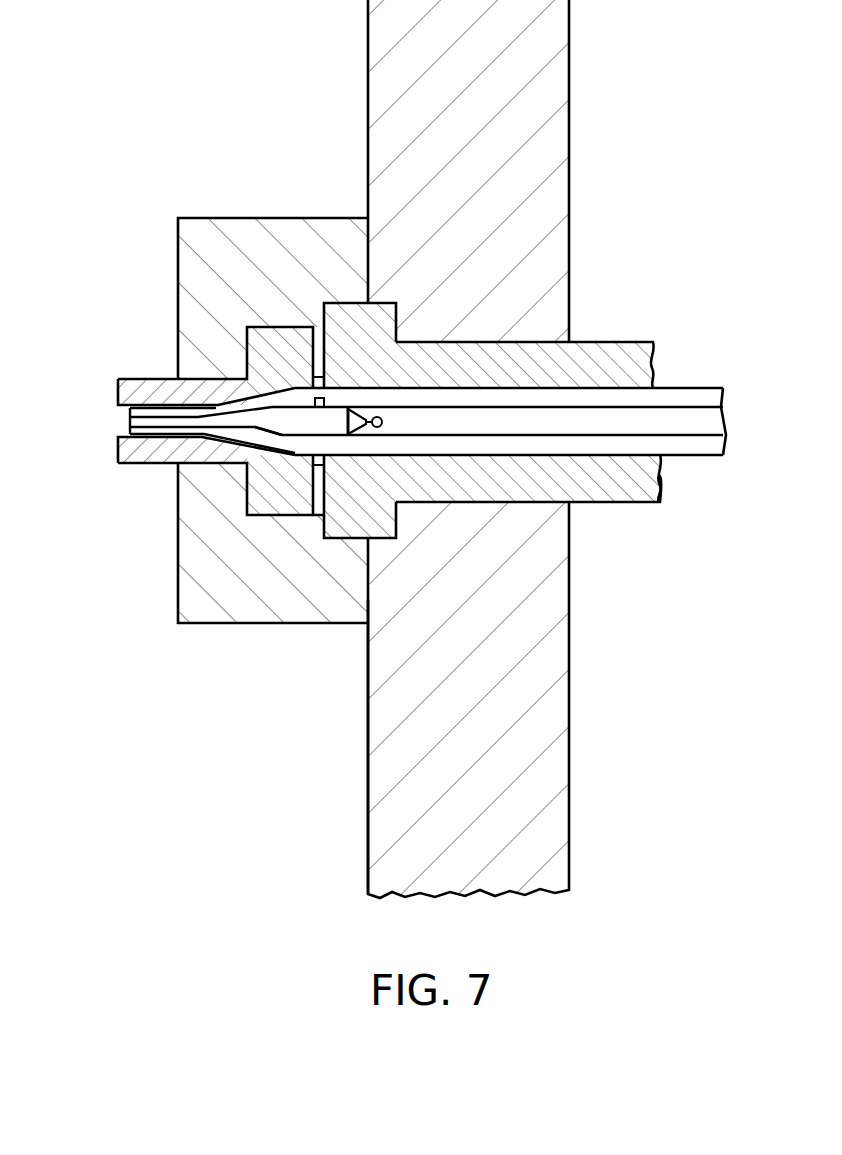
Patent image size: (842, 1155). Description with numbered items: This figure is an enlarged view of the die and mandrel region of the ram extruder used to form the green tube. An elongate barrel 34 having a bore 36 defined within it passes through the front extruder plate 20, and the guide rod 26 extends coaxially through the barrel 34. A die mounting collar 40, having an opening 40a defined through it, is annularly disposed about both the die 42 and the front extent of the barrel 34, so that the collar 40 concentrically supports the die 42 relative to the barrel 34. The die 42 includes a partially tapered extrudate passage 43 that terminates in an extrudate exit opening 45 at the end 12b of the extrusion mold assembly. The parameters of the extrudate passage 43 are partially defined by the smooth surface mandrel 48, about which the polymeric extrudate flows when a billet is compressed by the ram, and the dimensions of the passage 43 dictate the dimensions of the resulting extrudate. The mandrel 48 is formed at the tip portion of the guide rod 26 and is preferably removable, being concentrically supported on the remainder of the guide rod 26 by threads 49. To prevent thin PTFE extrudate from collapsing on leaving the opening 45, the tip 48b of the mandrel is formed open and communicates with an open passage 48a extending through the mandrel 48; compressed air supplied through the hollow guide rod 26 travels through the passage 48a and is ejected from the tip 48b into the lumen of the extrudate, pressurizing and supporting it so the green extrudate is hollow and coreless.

The rearward end 12b is at (362, 819).
The front extruder plate 20 is at (560, 766).
The guide rod 26 is at (600, 398).
The elongate barrel 34 is at (559, 136).
The bore 36 is at (690, 397).
The die mounting collar 40 is at (201, 623).
The opening 40a is at (245, 355).
The die 42 is at (260, 516).
The extrudate passage 43 is at (262, 440).
The extrudate exit opening 45 is at (130, 418).
The mandrel 48 is at (330, 397).
The open passage 48a is at (349, 398).
The tip 48b is at (126, 433).
The threads 49 is at (377, 428).